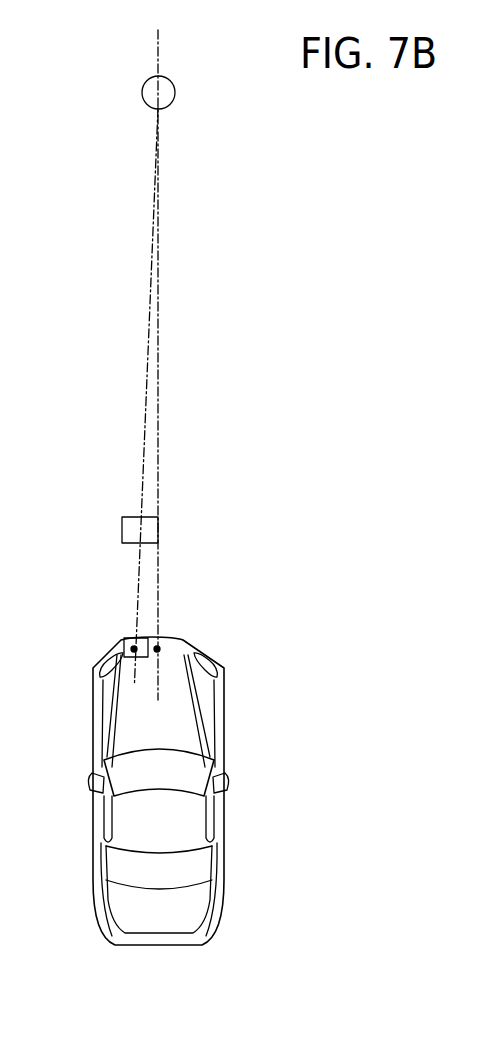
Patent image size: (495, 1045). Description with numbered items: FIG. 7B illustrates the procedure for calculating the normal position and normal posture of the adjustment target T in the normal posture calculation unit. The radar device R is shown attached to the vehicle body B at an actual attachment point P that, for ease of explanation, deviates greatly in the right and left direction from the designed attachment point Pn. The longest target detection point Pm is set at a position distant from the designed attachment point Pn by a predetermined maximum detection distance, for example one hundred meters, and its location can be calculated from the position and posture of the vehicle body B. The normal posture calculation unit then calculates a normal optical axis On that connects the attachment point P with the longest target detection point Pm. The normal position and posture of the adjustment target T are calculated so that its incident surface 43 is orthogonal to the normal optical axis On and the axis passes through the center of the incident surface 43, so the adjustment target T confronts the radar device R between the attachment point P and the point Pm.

The longest target detection point Pm is at (150, 100).
The normal optical axis On is at (144, 445).
The adjustment target T is at (122, 526).
The incident surface 43 is at (128, 544).
The attachment point P is at (132, 645).
The designed attachment point Pn is at (159, 647).
The radar device R is at (124, 650).
The vehicle body B is at (223, 733).